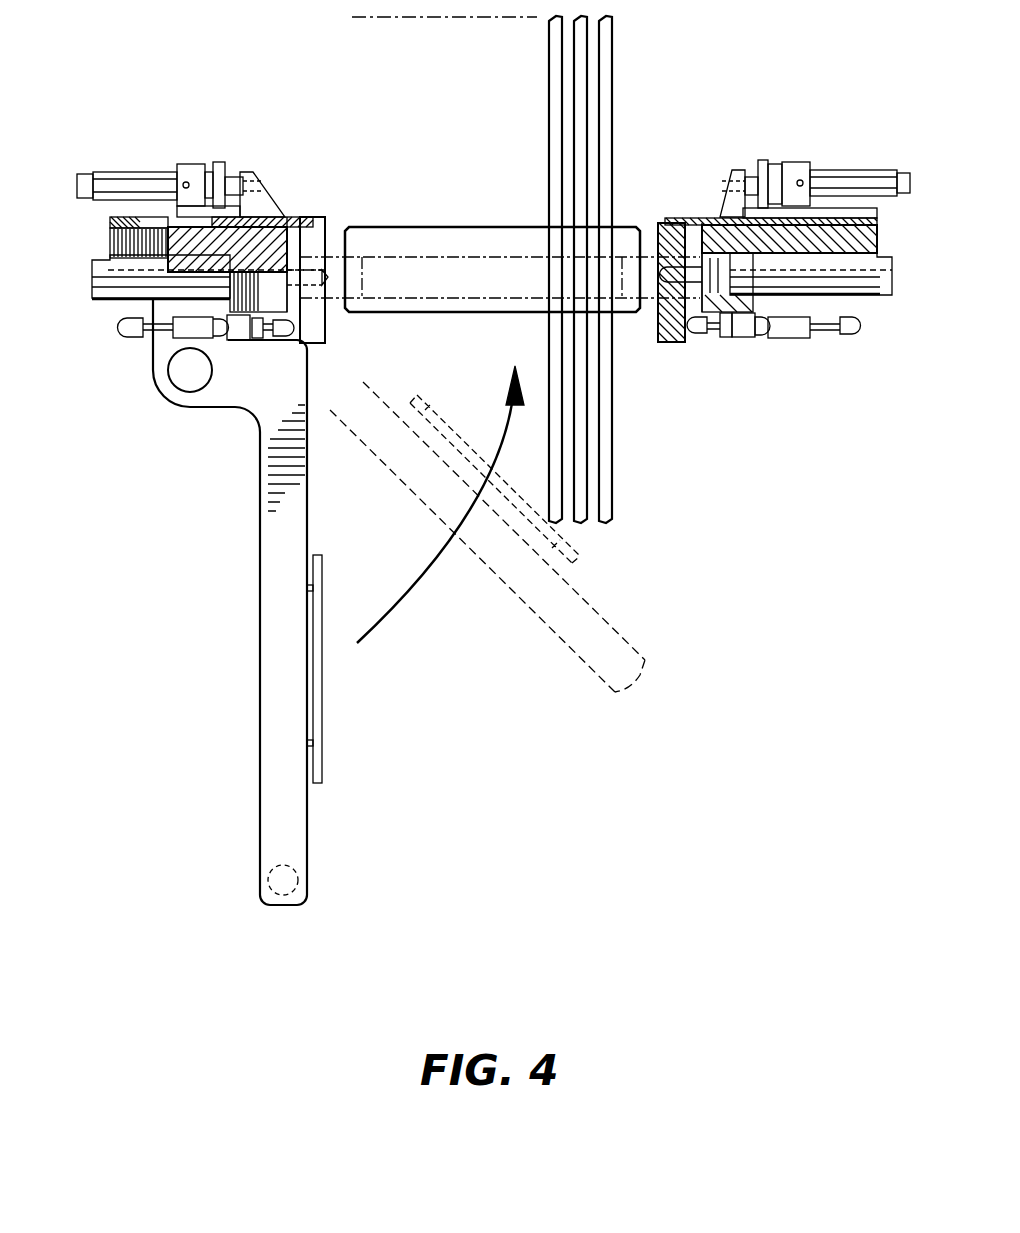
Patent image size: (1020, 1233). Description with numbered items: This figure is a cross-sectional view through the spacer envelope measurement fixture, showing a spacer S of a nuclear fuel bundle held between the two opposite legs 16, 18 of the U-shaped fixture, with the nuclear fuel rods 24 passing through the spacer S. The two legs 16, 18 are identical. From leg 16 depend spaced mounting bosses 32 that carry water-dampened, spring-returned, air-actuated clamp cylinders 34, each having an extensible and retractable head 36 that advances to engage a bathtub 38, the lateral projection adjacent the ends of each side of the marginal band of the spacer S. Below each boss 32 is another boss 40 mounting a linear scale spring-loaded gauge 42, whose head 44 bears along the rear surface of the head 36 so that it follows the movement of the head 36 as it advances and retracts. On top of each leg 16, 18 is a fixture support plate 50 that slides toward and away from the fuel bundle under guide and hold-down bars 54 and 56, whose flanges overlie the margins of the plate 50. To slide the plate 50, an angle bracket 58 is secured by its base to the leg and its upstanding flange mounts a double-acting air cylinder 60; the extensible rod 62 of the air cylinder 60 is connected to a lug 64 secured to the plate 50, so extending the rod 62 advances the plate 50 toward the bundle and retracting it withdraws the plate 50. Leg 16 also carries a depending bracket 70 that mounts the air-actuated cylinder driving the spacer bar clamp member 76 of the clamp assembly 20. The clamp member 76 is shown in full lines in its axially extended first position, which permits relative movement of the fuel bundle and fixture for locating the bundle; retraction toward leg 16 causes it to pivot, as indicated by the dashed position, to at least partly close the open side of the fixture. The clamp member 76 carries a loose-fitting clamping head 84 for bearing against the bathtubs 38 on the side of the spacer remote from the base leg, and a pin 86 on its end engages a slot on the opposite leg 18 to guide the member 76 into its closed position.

The leg 16 is at (178, 250).
The leg 18 is at (845, 238).
The clamp assembly 20 is at (478, 738).
The nuclear fuel rods 24 is at (553, 145).
The mounting bosses 32 is at (272, 298).
The clamp cylinders 34 is at (127, 287).
The head 36 is at (330, 347).
The bathtub 38 is at (323, 228).
The boss 40 is at (253, 340).
The gauge 42 is at (183, 332).
The head 44 is at (703, 332).
The plate 50 is at (297, 215).
The guide and hold-down bar 54 is at (877, 212).
The guide and hold-down bar 56 is at (110, 216).
The angle bracket 58 is at (203, 162).
The air cylinder 60 is at (120, 172).
The extensible rod 62 is at (240, 178).
The lug 64 is at (267, 207).
The depending bracket 70 is at (155, 350).
The spacer bar clamp member 76 is at (260, 728).
The clamping head 84 is at (323, 703).
The pin 86 is at (300, 883).
The spacer S is at (435, 227).